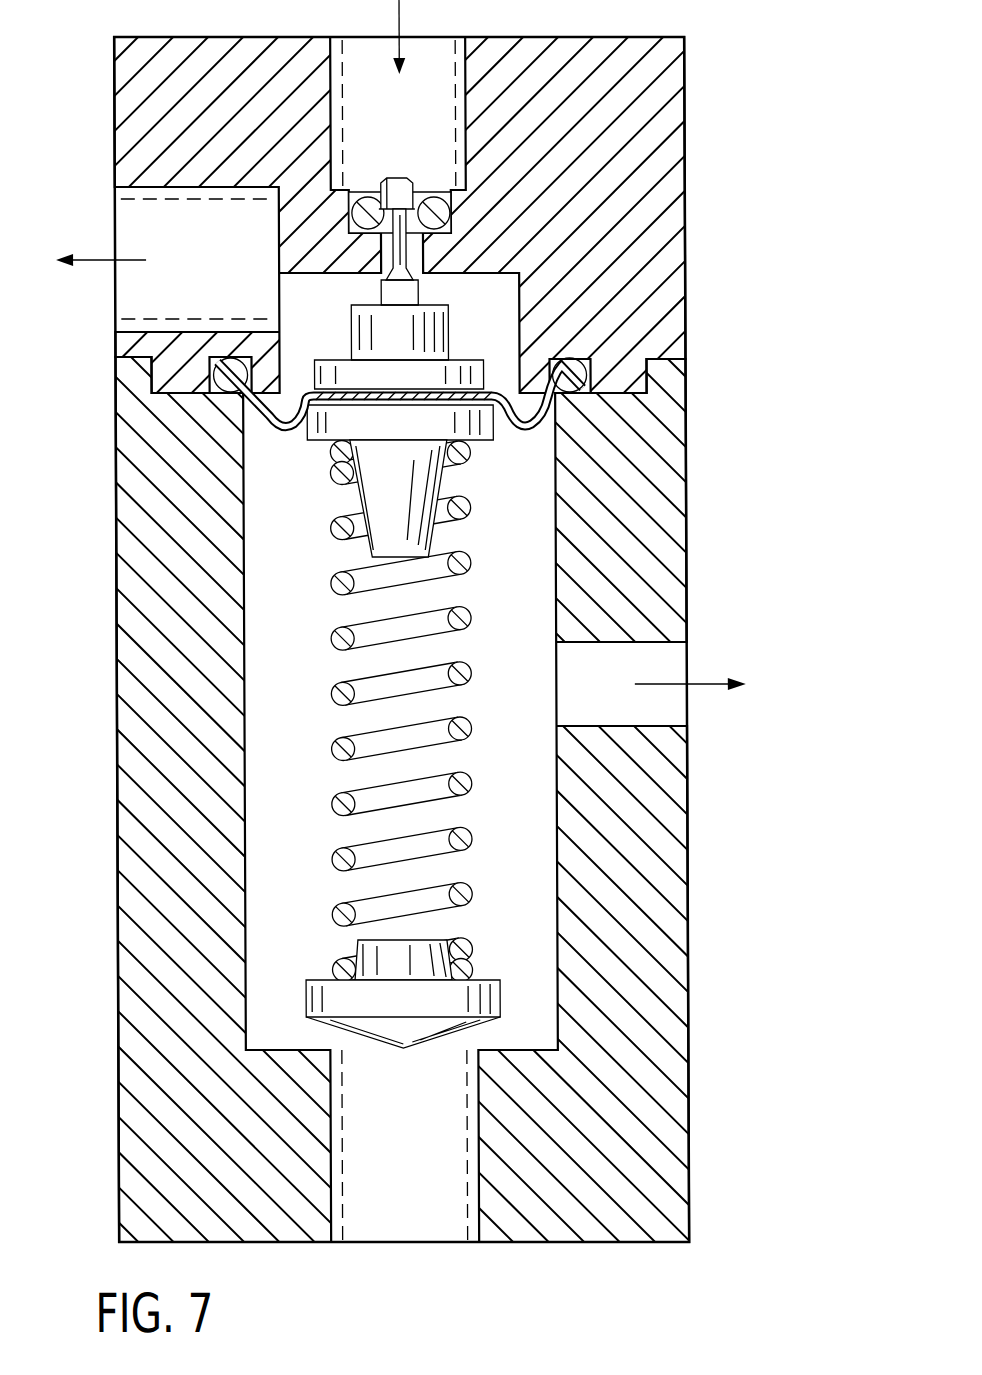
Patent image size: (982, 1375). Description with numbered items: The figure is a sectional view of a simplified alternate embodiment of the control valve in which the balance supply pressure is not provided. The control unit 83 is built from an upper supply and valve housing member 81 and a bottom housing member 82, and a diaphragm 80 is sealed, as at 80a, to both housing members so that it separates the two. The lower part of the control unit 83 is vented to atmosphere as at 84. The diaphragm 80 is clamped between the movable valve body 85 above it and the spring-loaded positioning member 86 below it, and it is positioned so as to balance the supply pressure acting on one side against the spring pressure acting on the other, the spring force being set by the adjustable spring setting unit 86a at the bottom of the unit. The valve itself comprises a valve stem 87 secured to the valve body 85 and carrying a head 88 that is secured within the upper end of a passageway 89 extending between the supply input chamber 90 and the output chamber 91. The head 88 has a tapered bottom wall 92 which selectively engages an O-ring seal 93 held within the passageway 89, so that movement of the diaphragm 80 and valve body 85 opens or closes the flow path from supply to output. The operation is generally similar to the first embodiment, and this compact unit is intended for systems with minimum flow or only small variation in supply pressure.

The diaphragm 80 is at (265, 412).
The seal 80a is at (683, 360).
The upper supply and valve housing member 81 is at (672, 184).
The bottom housing member 82 is at (650, 566).
The control unit 83 is at (307, 803).
The vent 84 is at (669, 706).
The movable valve body 85 is at (405, 341).
The spring-loaded positioning member 86 is at (403, 488).
The adjustable spring setting unit 86a is at (314, 988).
The valve stem 87 is at (405, 265).
The head 88 is at (390, 190).
The passageway 89 is at (268, 318).
The supply input chamber 90 is at (440, 160).
The output chamber 91 is at (153, 306).
The tapered bottom wall 92 is at (380, 268).
The O-ring seal 93 is at (352, 213).